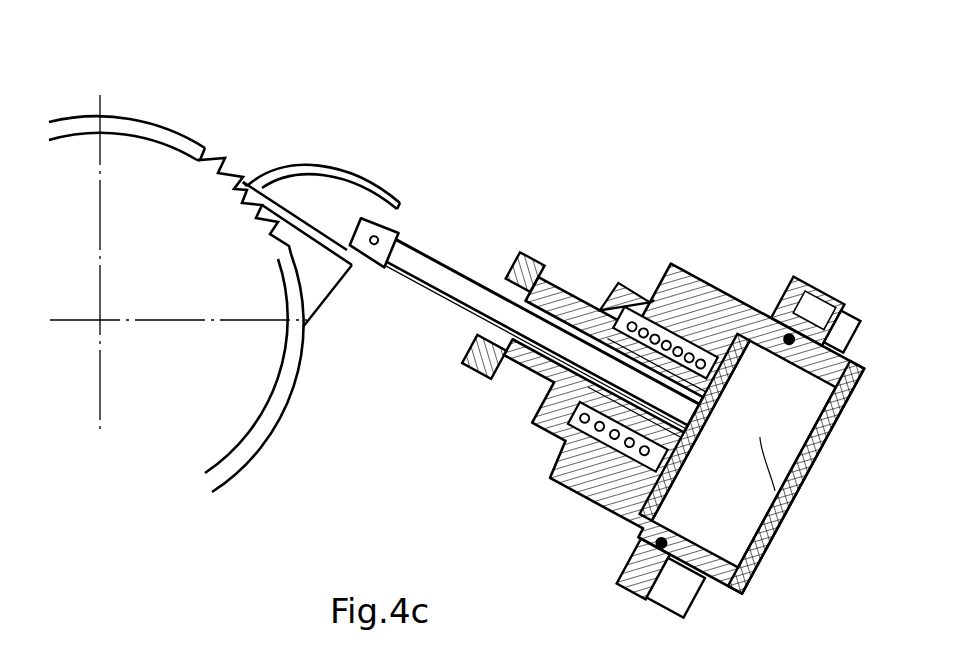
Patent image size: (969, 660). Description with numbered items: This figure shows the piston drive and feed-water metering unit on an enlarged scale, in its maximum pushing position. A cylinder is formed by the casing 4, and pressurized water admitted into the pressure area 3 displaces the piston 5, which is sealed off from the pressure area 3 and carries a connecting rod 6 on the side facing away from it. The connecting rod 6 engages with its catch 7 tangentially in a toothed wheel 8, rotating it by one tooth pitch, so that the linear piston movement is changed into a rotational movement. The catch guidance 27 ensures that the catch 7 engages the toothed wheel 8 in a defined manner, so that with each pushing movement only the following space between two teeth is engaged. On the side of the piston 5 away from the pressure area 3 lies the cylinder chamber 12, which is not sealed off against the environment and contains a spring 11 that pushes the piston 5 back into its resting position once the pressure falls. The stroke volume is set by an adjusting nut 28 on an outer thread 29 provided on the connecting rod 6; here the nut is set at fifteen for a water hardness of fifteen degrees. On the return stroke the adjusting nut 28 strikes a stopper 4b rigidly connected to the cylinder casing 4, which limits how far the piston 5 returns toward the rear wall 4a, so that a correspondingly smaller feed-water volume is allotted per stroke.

The pressure area 3 is at (765, 440).
The casing 4 is at (722, 305).
The rear wall 4a is at (833, 413).
The stopper 4b is at (550, 293).
The piston 5 is at (788, 512).
The connecting rod 6 is at (405, 262).
The catch 7 is at (312, 204).
The toothed wheel 8 is at (148, 160).
The spring 11 is at (590, 503).
The cylinder chamber 12 is at (687, 310).
The catch guidance 27 is at (307, 325).
The adjusting nut 28 is at (473, 383).
The outer thread 29 is at (433, 293).